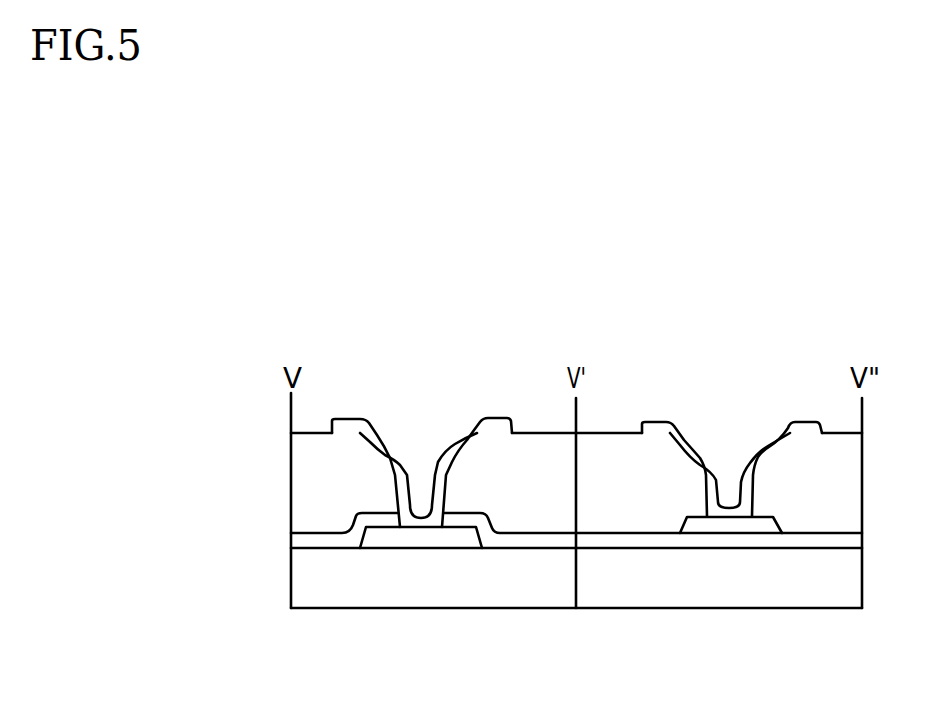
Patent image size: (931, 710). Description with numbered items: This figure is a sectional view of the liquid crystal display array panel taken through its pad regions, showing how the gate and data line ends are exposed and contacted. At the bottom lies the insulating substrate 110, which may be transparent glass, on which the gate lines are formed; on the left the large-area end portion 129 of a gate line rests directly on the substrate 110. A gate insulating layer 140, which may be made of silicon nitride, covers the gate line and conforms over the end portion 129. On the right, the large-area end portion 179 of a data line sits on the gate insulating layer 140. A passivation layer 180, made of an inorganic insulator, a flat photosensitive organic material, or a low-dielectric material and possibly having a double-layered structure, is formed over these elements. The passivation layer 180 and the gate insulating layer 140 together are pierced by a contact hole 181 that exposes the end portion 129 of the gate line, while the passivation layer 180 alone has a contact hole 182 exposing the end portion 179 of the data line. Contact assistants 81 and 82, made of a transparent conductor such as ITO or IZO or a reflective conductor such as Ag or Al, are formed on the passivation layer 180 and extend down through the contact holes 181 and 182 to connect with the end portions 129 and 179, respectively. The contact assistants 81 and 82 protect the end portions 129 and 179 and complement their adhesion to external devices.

The contact assistant 81 is at (372, 430).
The contact assistant 82 is at (675, 429).
The insulating substrate 110 is at (603, 592).
The end portion of gate line 129 is at (433, 532).
The gate insulating layer 140 is at (530, 545).
The end portion of data line 179 is at (732, 540).
The passivation layer 180 is at (522, 440).
The contact hole 181 is at (420, 457).
The contact hole 182 is at (731, 462).